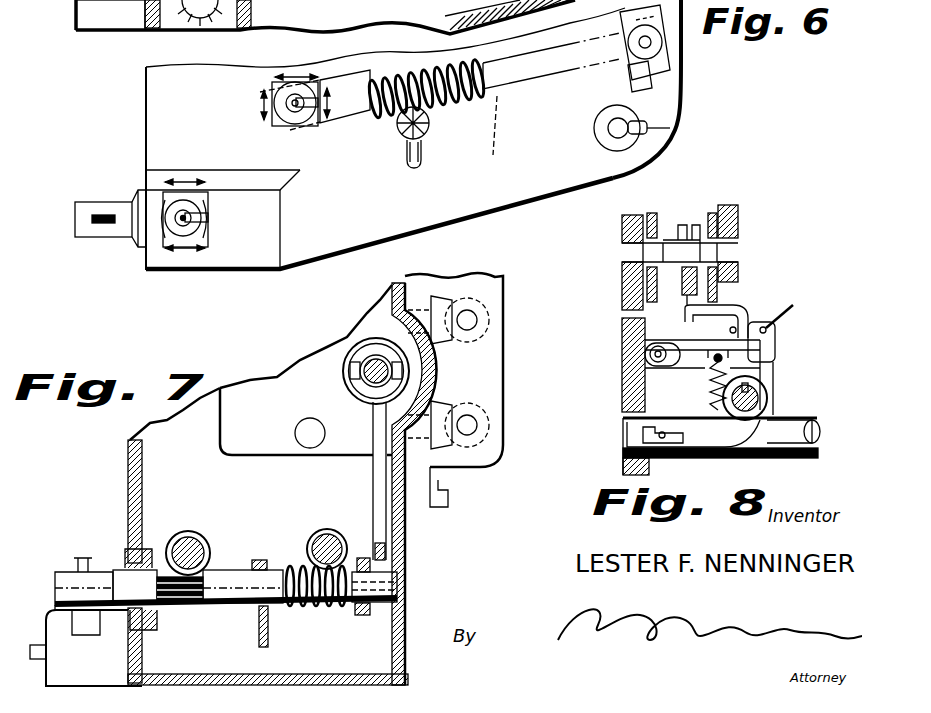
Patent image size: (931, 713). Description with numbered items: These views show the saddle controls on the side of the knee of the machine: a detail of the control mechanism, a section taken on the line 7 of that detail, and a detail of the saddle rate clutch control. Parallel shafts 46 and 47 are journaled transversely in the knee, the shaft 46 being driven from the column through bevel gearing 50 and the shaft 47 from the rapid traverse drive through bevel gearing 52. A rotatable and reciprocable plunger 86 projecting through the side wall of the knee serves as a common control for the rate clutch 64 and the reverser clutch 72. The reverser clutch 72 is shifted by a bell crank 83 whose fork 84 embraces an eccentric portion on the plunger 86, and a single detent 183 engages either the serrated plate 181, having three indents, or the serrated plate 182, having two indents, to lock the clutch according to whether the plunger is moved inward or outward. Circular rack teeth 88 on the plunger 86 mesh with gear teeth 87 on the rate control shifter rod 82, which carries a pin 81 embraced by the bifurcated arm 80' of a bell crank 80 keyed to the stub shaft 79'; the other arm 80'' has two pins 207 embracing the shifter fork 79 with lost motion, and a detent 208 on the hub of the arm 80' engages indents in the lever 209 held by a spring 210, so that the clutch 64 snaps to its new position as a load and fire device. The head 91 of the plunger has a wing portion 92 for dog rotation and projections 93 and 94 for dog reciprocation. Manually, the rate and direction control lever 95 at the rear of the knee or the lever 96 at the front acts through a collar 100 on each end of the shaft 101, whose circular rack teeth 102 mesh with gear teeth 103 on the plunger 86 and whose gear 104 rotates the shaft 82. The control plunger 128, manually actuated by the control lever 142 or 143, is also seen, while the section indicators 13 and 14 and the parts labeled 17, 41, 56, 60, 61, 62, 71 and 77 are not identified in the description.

In FIG. 6, the section line 7 is at (419, 258).
In FIG. 6, the section line 13- 13 is at (228, 302).
In FIG. 6, the section line 14- 14 is at (675, 135).
In FIG. 7, the housing 17 is at (410, 521).
In FIG. 6, the frame 41 is at (110, 15).
In FIG. 7, the shaft 46 is at (417, 318).
In FIG. 7, the shaft 47 is at (452, 478).
In FIG. 7, the bevel gearing 50 is at (485, 318).
In FIG. 7, the bevel gearing 52 is at (485, 423).
In FIG. 6, the gear 56 is at (200, 14).
In FIG. 8, the bearing block 60 is at (622, 288).
In FIG. 6, the bearing 61 is at (251, 12).
In FIG. 8, the bearing block 62 is at (720, 292).
In FIG. 8, the rate clutch 64 is at (680, 275).
In FIG. 7, the shaft 71 is at (360, 380).
In FIG. 7, the reverser clutch 72 is at (364, 346).
In FIG. 6, the housing wall 77 is at (607, 172).
In FIG. 8, the shifter fork 79 is at (789, 317).
In FIG. 8, the stub shaft 79' is at (761, 428).
In FIG. 8, the bell crank 80 is at (693, 419).
In FIG. 8, the bell crank arm 80' is at (717, 462).
In FIG. 8, the bell crank arm 80'' is at (790, 343).
In FIG. 8, the pin 81 is at (651, 421).
In FIG. 7, the shifter rod 82 is at (323, 532).
In FIG. 8, the shifter rod 82 is at (780, 425).
In FIG. 7, the bell crank 83 is at (373, 458).
In FIG. 7, the fork 84 is at (380, 613).
In FIG. 7, the plunger 86 is at (210, 605).
In FIG. 7, the gear teeth 87 is at (293, 560).
In FIG. 7, the circular rack teeth 88 is at (290, 607).
In FIG. 7, the head 91 is at (62, 572).
In FIG. 6, the wing portion 92 is at (422, 156).
In FIG. 7, the wing portion 92 is at (75, 635).
In FIG. 6, the projection 93 is at (397, 126).
In FIG. 6, the projection 94 is at (430, 122).
In FIG. 7, the projection 94 is at (100, 542).
In FIG. 6, the rate and direction control lever 95 is at (280, 122).
In FIG. 6, the control lever 96 is at (681, 78).
In FIG. 6, the collar 100 is at (306, 128).
In FIG. 6, the shaft 101 is at (493, 155).
In FIG. 7, the shaft 101 is at (184, 538).
In FIG. 6, the circular rack teeth 102 is at (372, 73).
In FIG. 7, the circular rack teeth 102 is at (222, 568).
In FIG. 7, the gear teeth 103 is at (200, 608).
In FIG. 6, the gear 104 is at (630, 86).
In FIG. 6, the control plunger 128 is at (90, 238).
In FIG. 6, the control lever 142 is at (208, 224).
In FIG. 6, the control lever 143 is at (676, 133).
In FIG. 7, the serrated plate 181 is at (258, 628).
In FIG. 7, the serrated plate 182 is at (258, 560).
In FIG. 7, the detent 183 is at (266, 648).
In FIG. 8, the pins 207 is at (716, 318).
In FIG. 8, the detent 208 is at (760, 377).
In FIG. 8, the lever 209 is at (622, 343).
In FIG. 8, the spring 210 is at (677, 356).